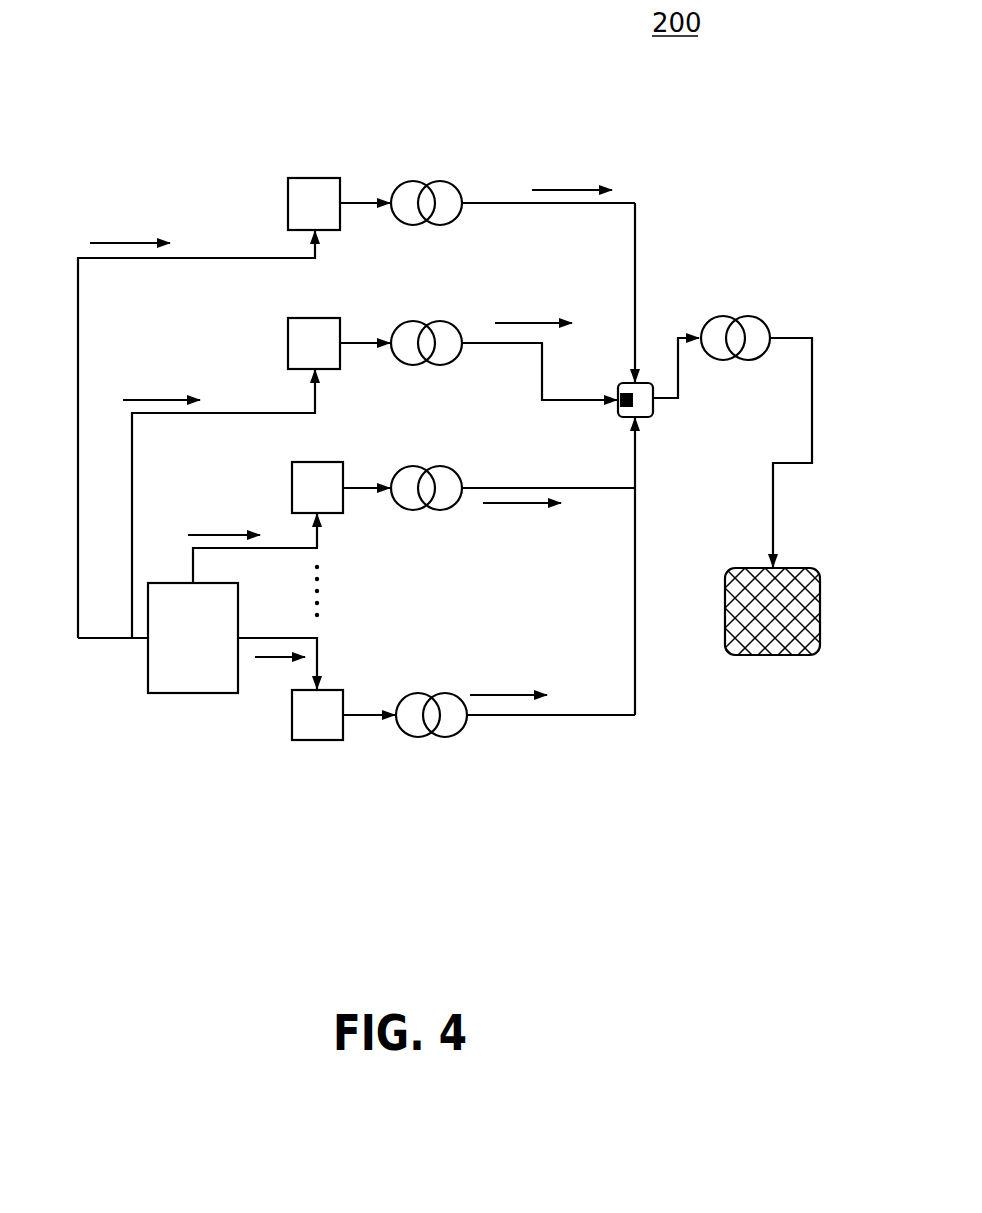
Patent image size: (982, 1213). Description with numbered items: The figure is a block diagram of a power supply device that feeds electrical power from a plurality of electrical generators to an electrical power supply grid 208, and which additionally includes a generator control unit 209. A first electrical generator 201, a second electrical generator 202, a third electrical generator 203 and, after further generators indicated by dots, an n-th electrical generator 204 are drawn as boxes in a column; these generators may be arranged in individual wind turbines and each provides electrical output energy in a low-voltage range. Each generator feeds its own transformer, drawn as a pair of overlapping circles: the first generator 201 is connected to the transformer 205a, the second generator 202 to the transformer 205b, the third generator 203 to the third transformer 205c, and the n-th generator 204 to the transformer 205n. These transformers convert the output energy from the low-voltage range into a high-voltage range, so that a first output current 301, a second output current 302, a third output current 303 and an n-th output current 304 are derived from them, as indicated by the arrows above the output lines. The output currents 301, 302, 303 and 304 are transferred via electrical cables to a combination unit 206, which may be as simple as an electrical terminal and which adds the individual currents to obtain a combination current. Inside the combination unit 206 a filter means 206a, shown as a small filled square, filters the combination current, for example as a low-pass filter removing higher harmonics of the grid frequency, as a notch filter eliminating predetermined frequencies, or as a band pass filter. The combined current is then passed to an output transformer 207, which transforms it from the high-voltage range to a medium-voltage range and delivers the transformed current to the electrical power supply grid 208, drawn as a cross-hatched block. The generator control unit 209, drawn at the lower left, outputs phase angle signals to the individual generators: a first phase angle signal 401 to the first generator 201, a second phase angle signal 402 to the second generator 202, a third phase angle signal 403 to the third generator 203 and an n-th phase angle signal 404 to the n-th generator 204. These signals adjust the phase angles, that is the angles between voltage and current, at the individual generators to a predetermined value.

The first electrical generator 201 is at (288, 200).
The second electrical generator 202 is at (288, 345).
The third electrical generator 203 is at (292, 490).
The n-th electrical generator 204 is at (317, 740).
The transformer 205a is at (442, 182).
The transformer 205b is at (458, 308).
The third transformer 205c is at (440, 466).
The transformer 205n is at (418, 738).
The combination unit 206 is at (633, 426).
The filter means 206a is at (617, 397).
The output transformer 207 is at (752, 315).
The electrical power supply grid 208 is at (725, 615).
The generator control unit 209 is at (193, 693).
The first output current 301 is at (570, 188).
The second output current 302 is at (530, 320).
The third output current 303 is at (517, 500).
The n-th output current 304 is at (507, 690).
The first phase angle signal 401 is at (120, 240).
The second phase angle signal 402 is at (153, 398).
The third phase angle signal 403 is at (218, 533).
The n-th phase angle signal 404 is at (264, 662).